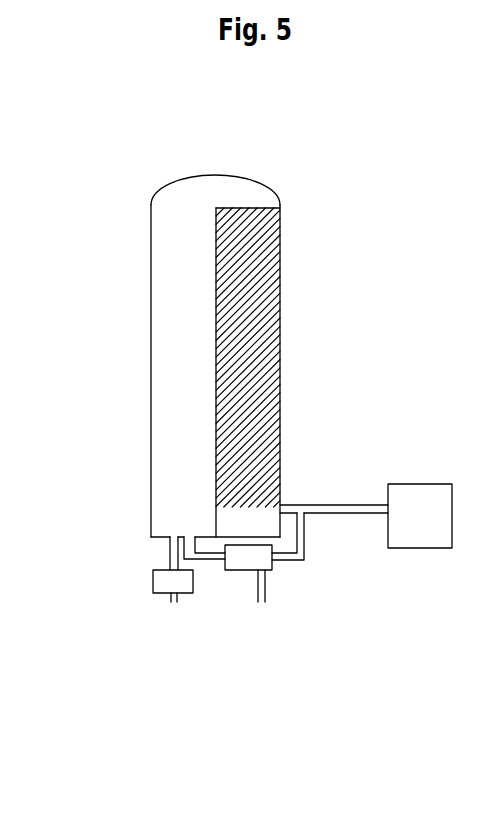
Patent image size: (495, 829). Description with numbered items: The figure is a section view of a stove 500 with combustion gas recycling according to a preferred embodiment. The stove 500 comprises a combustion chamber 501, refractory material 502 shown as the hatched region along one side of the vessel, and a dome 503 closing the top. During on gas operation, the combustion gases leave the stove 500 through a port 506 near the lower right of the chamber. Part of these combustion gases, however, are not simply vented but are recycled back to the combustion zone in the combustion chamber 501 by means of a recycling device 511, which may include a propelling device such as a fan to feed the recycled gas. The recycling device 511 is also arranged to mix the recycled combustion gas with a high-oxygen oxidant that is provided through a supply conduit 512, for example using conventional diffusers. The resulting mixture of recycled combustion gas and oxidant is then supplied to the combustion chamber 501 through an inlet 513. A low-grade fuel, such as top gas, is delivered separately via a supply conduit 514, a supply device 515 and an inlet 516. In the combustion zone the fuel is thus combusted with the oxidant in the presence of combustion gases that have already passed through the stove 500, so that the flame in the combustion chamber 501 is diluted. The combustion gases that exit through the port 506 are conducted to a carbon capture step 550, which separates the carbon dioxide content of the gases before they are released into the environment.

The stove 500 is at (118, 172).
The combustion chamber 501 is at (175, 318).
The refractory material 502 is at (253, 332).
The dome 503 is at (215, 187).
The port 506 is at (288, 506).
The recycling device 511 is at (275, 570).
The supply conduit 512 is at (265, 602).
The inlet 513 is at (185, 537).
The supply conduit 514 is at (177, 602).
The supply device 515 is at (153, 573).
The inlet 516 is at (172, 537).
The carbon capture step 550 is at (422, 484).